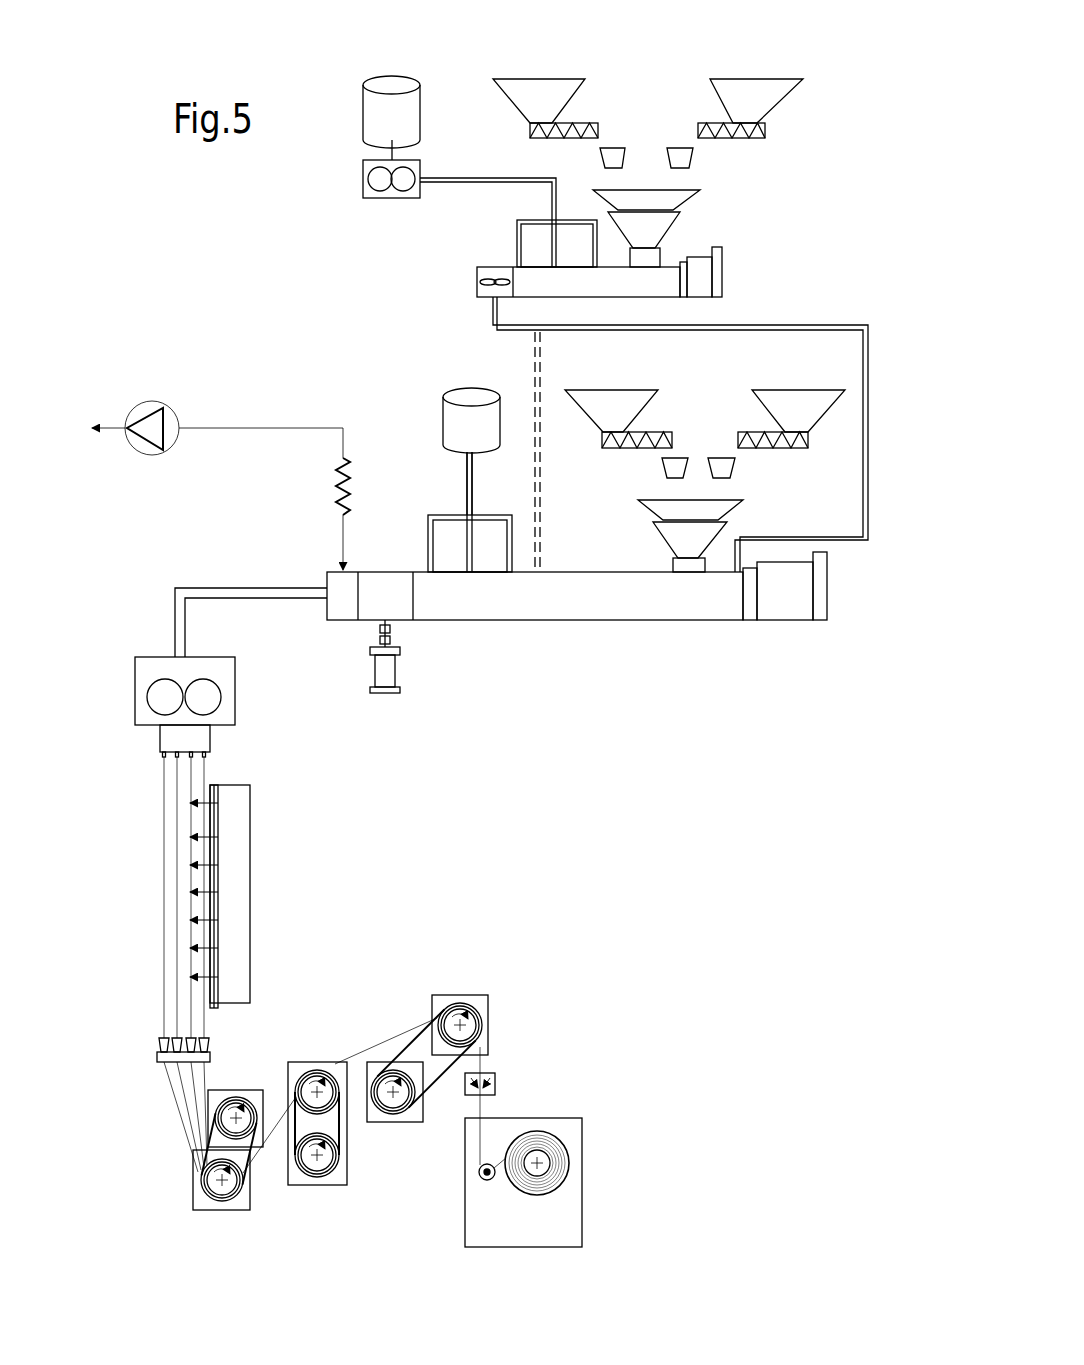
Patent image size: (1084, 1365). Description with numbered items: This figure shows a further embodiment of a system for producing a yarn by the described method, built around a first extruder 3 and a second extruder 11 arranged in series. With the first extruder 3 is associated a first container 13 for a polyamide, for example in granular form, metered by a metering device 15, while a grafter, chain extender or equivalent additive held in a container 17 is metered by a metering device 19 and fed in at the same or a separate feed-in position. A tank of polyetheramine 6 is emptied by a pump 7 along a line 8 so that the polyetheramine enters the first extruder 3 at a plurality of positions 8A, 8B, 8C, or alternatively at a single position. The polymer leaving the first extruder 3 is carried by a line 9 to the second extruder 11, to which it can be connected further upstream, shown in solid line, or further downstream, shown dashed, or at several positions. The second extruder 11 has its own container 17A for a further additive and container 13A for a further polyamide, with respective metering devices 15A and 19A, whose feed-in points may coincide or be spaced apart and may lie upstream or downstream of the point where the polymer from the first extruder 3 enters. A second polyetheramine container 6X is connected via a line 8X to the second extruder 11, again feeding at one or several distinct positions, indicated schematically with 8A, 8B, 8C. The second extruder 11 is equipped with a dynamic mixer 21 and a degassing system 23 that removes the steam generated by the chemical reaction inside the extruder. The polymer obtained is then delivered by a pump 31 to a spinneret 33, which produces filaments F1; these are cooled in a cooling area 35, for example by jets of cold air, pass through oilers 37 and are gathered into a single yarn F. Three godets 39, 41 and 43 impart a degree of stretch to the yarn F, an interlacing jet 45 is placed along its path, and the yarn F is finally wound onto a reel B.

The container of an additive 17 is at (515, 72).
The first container for a polyamide 13 is at (786, 70).
The metering device 19 is at (597, 160).
The metering device 15 is at (711, 163).
The tank of polyetheramine 6 is at (376, 116).
The pump 7 is at (367, 176).
The line 8 is at (461, 178).
The feed-in position 8A is at (530, 220).
The feed-in position 8B is at (552, 238).
The feed-in position 8C is at (597, 240).
The first extruder 3 is at (738, 286).
The line 9 is at (493, 312).
The container for a further additive 17A is at (610, 396).
The container for a further polyamide 13A is at (803, 387).
The metering device 19A is at (656, 471).
The metering device 15A is at (743, 473).
The second polyetheramine container 6X is at (448, 425).
The line 8X is at (467, 496).
The second extruder 11 is at (688, 646).
The dynamic mixer 21 is at (395, 668).
The degassing system 23 is at (299, 498).
The pump 31 is at (164, 652).
The spinneret 33 is at (180, 738).
The filaments F1 is at (192, 766).
The cooling area 35 is at (268, 914).
The oilers 37 is at (212, 1058).
The godet 39 is at (227, 1213).
The godet 41 is at (333, 1188).
The godet 43 is at (393, 1125).
The yarn F is at (391, 1043).
The interlacing jet 45 is at (497, 1082).
The reel B is at (560, 1160).